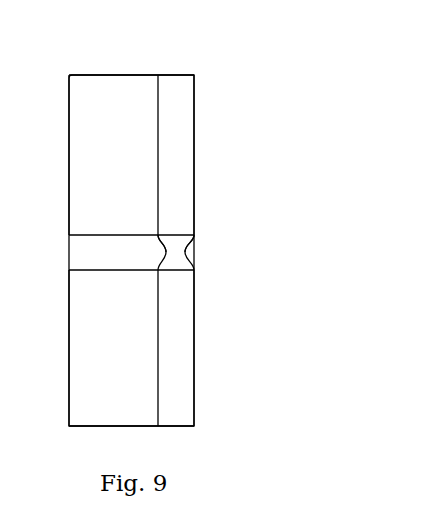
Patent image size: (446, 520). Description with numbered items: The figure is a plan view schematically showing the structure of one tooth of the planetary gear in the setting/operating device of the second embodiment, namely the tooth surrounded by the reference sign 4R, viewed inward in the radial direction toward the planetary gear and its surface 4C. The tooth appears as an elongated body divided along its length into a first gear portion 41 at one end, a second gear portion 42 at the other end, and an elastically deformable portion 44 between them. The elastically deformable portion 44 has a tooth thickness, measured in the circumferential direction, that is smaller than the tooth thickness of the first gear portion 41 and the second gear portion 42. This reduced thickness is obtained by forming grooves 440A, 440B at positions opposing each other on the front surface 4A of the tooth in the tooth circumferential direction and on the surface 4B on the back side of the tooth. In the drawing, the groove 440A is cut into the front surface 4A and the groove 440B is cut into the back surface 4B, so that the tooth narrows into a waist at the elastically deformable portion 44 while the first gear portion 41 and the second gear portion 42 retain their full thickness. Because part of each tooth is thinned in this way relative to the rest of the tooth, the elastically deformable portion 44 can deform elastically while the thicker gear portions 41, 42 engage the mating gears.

The reference sign region of one tooth 4R is at (250, 68).
The first gear portion 41 is at (69, 151).
The second gear portion 42 is at (69, 349).
The elastically deformable portion 44 is at (69, 251).
The front surface 4A is at (194, 152).
The back side surface 4B is at (158, 152).
The surface of the planetary gear 4C is at (182, 358).
The groove 440A is at (186, 253).
The groove 440B is at (165, 240).